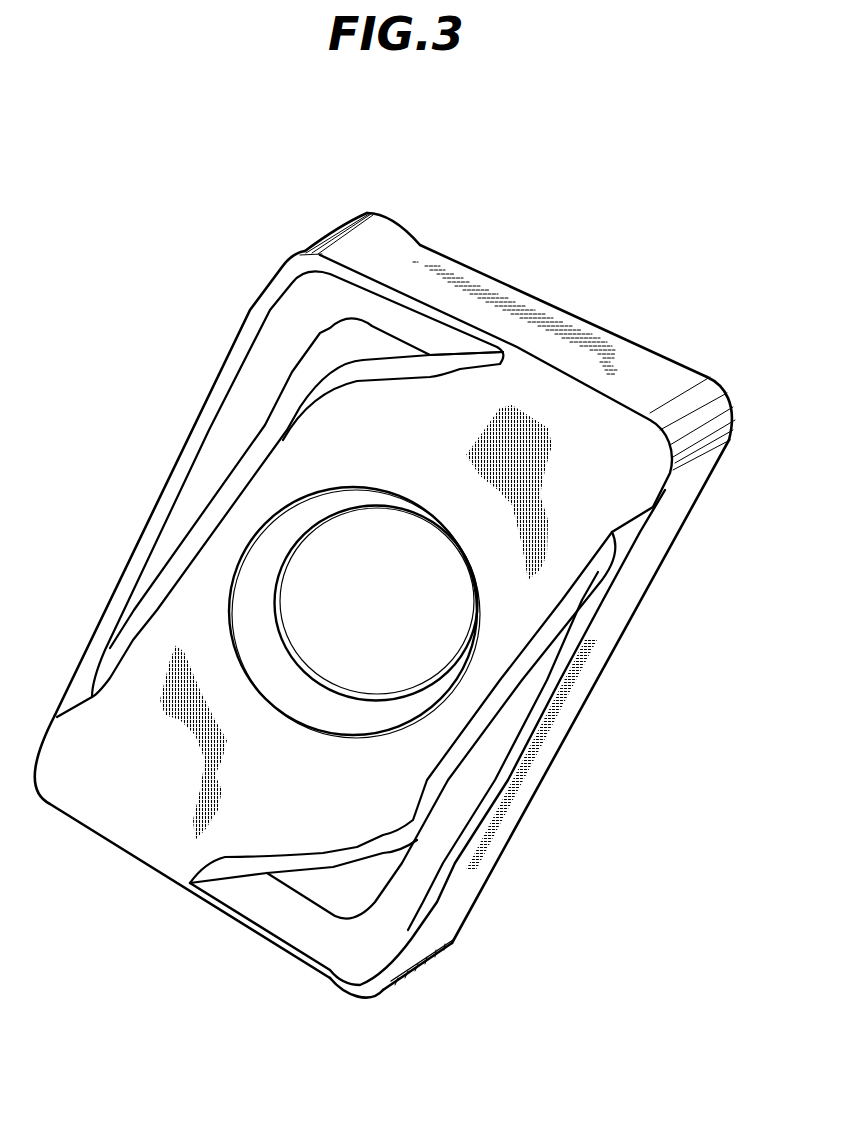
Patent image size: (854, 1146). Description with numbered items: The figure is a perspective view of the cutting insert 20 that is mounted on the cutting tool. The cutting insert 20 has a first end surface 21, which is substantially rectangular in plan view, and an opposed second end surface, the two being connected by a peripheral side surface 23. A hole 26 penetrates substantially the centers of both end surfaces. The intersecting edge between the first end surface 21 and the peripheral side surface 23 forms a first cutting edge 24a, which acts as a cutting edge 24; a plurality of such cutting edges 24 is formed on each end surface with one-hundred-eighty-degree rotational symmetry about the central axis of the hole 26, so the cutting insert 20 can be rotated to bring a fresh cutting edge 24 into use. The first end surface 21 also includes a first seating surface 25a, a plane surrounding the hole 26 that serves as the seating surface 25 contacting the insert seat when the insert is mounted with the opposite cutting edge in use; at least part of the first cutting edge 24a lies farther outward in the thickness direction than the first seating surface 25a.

The cutting insert 20 is at (333, 418).
The first end surface 21 is at (300, 463).
The peripheral side surface 23 is at (587, 343).
The cutting edge 24 is at (320, 257).
The first cutting edge 24a is at (377, 997).
The seating surface 25 is at (357, 767).
The first seating surface 25a is at (313, 773).
The hole 26 is at (450, 660).